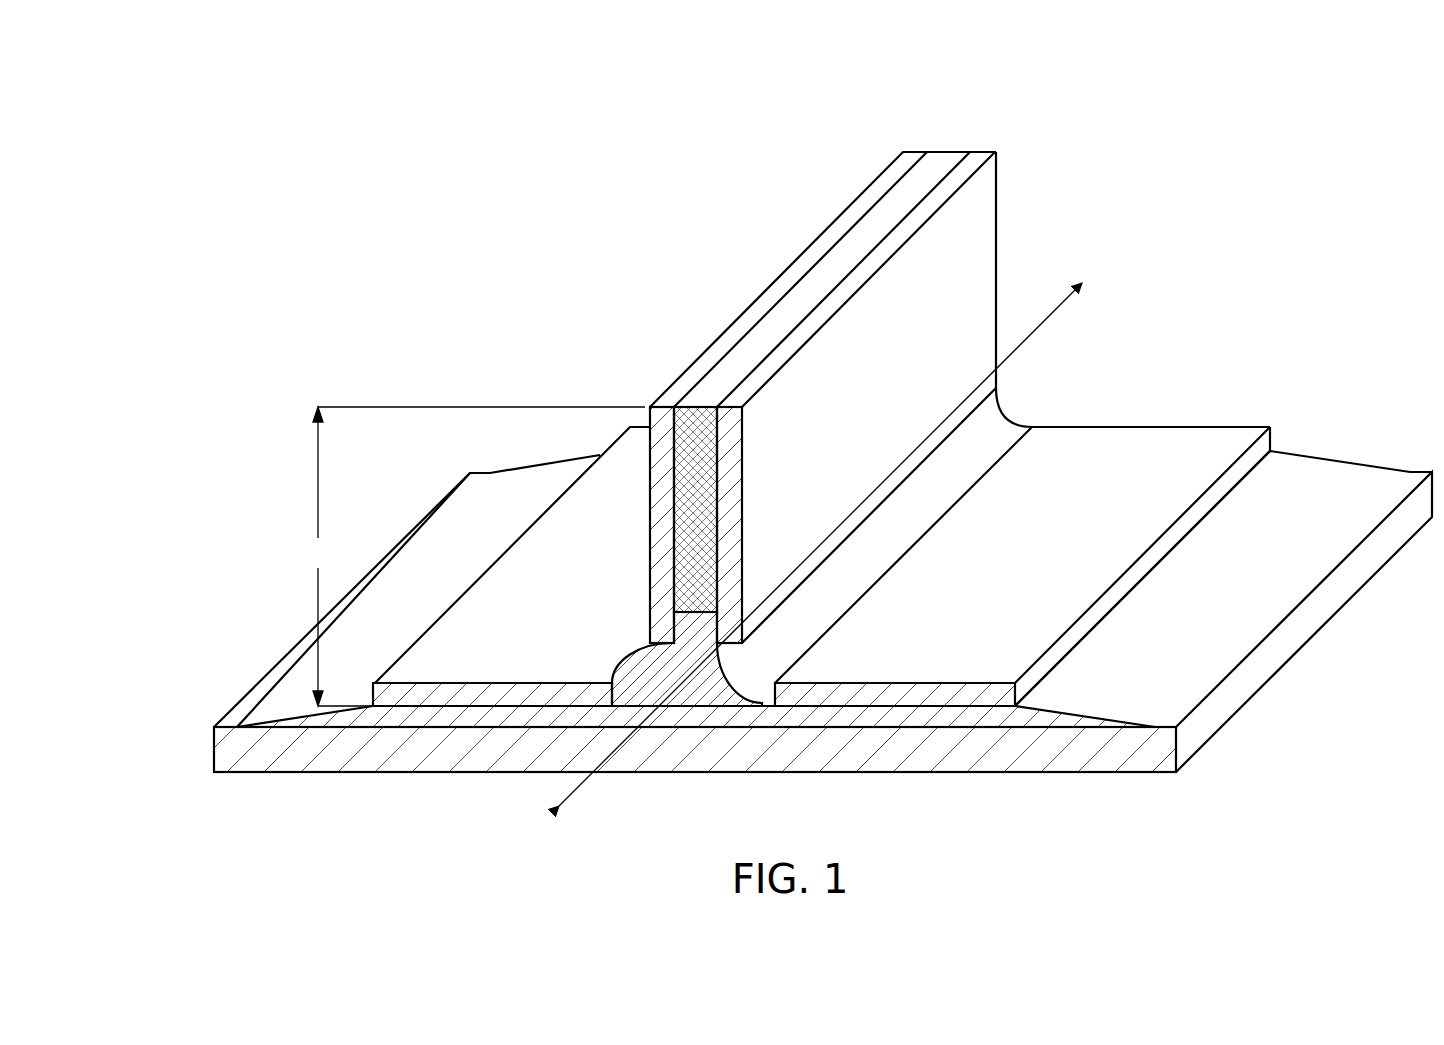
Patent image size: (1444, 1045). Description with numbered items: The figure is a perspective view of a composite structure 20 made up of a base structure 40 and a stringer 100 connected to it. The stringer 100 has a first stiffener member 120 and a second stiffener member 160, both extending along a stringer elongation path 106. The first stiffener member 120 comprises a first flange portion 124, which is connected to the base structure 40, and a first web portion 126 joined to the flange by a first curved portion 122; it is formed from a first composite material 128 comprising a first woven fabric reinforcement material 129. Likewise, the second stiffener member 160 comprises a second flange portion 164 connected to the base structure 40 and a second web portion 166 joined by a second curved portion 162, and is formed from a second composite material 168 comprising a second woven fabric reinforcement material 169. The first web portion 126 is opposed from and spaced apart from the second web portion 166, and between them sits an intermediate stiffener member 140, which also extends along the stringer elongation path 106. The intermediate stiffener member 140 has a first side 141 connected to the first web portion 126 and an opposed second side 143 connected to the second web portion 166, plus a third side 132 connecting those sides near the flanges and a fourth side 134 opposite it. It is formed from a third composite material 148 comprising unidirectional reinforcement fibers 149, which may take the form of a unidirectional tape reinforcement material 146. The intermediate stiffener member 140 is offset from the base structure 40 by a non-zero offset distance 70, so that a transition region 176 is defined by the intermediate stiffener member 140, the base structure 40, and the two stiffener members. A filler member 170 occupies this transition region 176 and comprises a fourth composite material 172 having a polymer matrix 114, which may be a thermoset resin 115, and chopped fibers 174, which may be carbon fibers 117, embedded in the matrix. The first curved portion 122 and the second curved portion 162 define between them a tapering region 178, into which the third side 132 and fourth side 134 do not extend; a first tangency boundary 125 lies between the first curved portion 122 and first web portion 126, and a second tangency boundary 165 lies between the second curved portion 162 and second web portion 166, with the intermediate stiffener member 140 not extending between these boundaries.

The composite structure 20 is at (140, 407).
The base structure 40 is at (1083, 760).
The non-zero offset distance 70 is at (565, 612).
The stringer 100 is at (212, 407).
The stringer elongation path 106 is at (820, 531).
The polymer matrix 114 is at (718, 613).
The thermoset resin 115 is at (700, 613).
The carbon fibers 117 is at (730, 641).
The first stiffener member 120 is at (847, 213).
The first curved portion 122 is at (608, 648).
The first flange portion 124 is at (415, 655).
The first tangency boundary 125 is at (672, 646).
The first web portion 126 is at (650, 510).
The first composite material 128 is at (787, 282).
The first woven fabric reinforcement material 129 is at (737, 327).
The third side 132 is at (678, 606).
The fourth side 134 is at (867, 246).
The intermediate stiffener member 140 is at (943, 152).
The first side 141 is at (674, 482).
The second side 143 is at (718, 482).
The unidirectional tape reinforcement material 146 is at (704, 381).
The third composite material 148 is at (912, 170).
The unidirectional reinforcement fibers 149 is at (947, 164).
The second stiffener member 160 is at (986, 155).
The second curved portion 162 is at (994, 407).
The second flange portion 164 is at (1205, 437).
The second tangency boundary 165 is at (687, 556).
The second web portion 166 is at (996, 226).
The second composite material 168 is at (1145, 437).
The second woven fabric reinforcement material 169 is at (996, 190).
The filler member 170 is at (640, 704).
The fourth composite material 172 is at (737, 701).
The chopped fibers 174 is at (688, 699).
The transition region 176 is at (812, 612).
The tapering region 178 is at (750, 642).